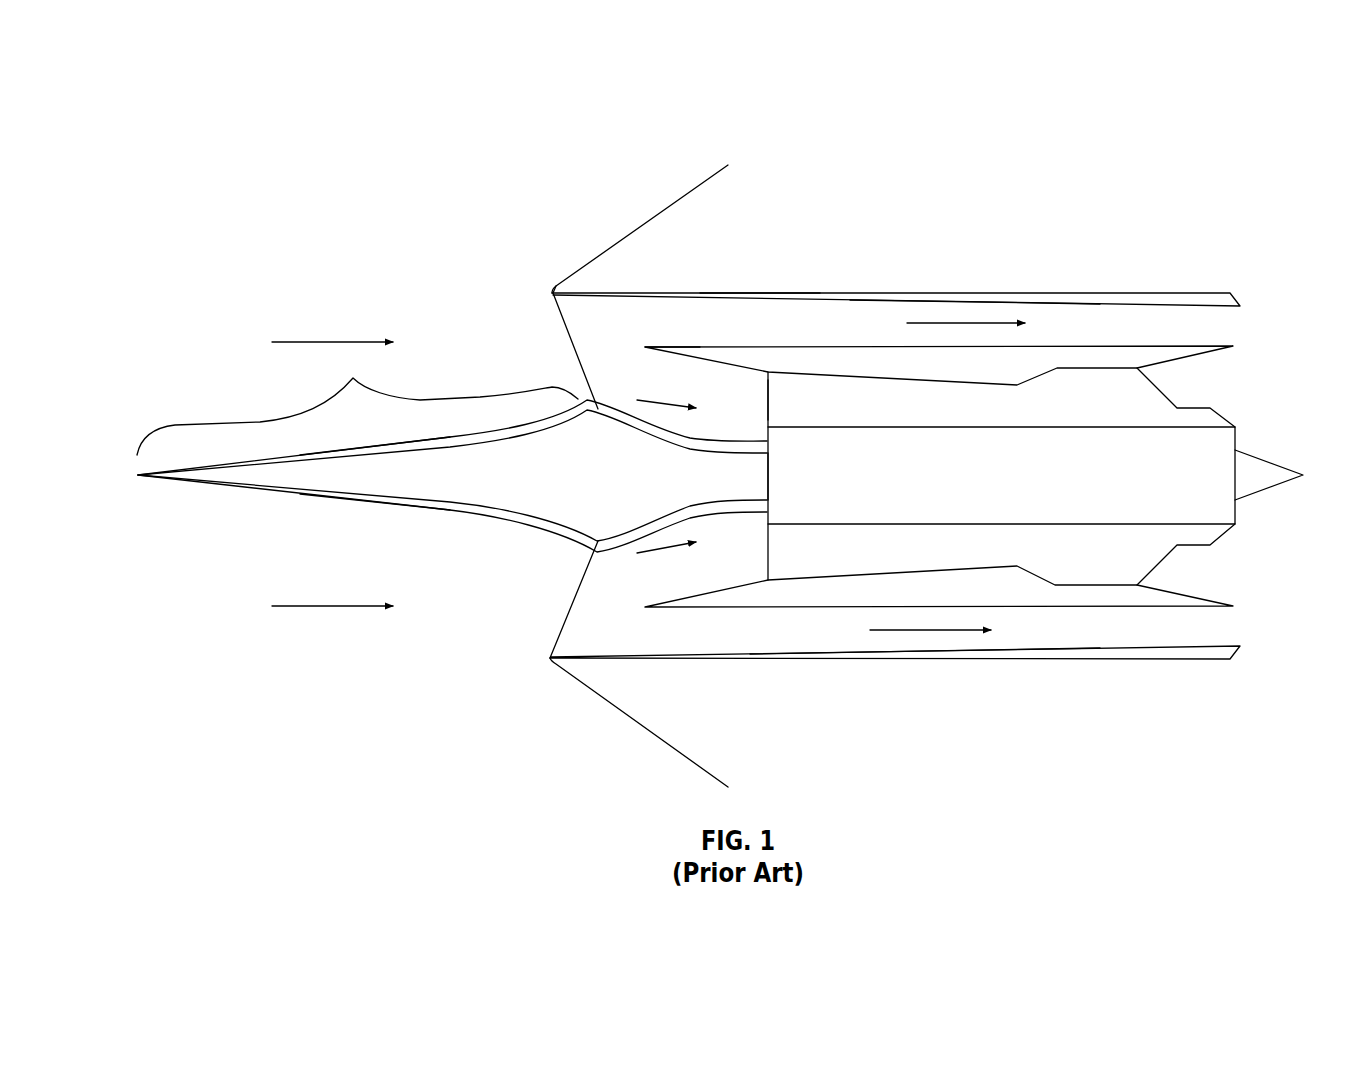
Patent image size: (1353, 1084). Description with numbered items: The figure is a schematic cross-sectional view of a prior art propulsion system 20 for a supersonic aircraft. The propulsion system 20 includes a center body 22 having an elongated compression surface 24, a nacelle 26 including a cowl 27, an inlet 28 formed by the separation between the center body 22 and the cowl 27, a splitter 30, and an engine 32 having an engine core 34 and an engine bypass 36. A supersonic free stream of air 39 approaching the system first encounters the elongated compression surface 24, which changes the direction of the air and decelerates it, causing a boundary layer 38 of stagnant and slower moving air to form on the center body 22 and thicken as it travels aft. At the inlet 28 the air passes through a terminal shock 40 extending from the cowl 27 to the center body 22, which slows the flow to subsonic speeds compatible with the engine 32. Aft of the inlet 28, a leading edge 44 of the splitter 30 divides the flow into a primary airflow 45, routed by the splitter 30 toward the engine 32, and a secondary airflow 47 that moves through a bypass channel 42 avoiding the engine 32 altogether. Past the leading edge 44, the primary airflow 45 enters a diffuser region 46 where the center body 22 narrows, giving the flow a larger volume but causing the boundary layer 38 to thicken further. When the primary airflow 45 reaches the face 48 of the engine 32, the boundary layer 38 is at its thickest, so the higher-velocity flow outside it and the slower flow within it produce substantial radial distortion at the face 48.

The propulsion system 20 is at (1176, 185).
The center body 22 is at (572, 517).
The elongated compression surface 24 is at (357, 400).
The nacelle 26 is at (820, 281).
The cowl 27 is at (587, 293).
The inlet 28 is at (540, 294).
The splitter 30 is at (822, 346).
The engine 32 is at (1172, 565).
The engine core 34 is at (1220, 443).
The engine bypass 36 is at (1142, 398).
The boundary layer 38 is at (481, 435).
The supersonic free stream of air 39 is at (326, 342).
The terminal shock 40 is at (573, 338).
The bypass channel 42 is at (880, 317).
The leading edge 44 is at (646, 344).
The primary airflow 45 is at (662, 400).
The diffuser region 46 is at (752, 393).
The secondary airflow 47 is at (967, 316).
The face 48 is at (767, 535).